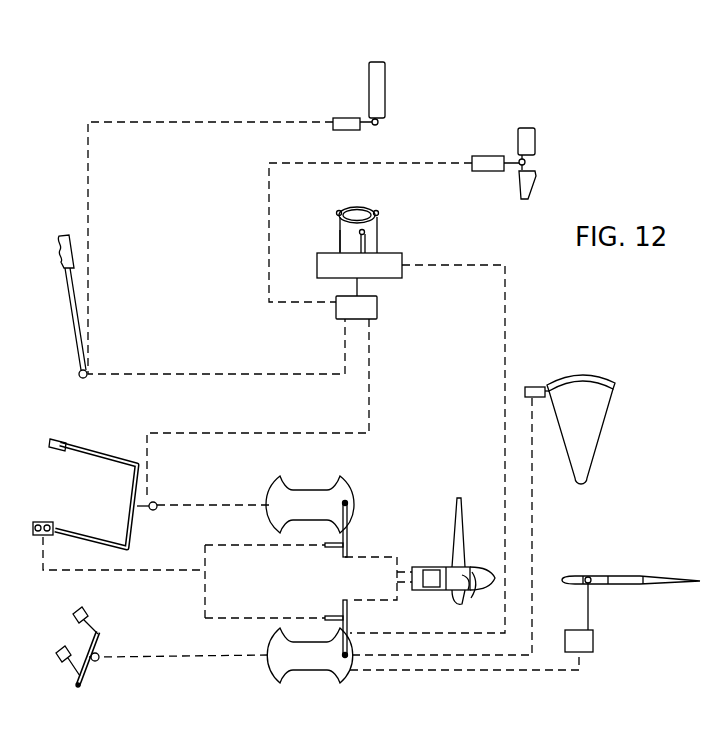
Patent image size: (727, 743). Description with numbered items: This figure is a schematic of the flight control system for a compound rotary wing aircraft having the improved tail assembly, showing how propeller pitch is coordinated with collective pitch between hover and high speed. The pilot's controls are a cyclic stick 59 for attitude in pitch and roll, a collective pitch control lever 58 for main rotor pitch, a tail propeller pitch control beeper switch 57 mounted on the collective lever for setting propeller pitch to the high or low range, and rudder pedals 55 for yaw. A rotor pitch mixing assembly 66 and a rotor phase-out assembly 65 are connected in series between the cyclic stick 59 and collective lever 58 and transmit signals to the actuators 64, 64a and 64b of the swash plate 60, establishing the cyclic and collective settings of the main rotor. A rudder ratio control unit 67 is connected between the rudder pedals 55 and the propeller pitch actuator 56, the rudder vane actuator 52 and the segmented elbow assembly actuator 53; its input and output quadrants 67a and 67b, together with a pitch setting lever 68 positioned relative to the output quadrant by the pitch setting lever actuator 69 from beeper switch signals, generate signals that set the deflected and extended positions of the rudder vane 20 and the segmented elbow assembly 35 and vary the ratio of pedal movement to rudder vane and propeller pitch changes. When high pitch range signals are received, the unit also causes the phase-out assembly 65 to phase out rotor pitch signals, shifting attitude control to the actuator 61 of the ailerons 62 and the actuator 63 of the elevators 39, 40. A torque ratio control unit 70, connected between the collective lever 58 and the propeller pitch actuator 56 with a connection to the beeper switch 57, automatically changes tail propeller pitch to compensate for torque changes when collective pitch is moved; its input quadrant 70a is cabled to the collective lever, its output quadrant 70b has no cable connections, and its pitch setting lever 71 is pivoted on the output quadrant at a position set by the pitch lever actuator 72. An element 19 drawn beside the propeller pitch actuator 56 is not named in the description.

The outboard motor 19 is at (470, 582).
The rudder vane 20 is at (650, 576).
The segmented elbow assembly 35 is at (591, 428).
The elevator 39 is at (537, 180).
The elevator 40 is at (535, 141).
The rudder vane actuator 52 is at (593, 640).
The segmented elbow assembly actuator 53 is at (533, 387).
The rudder pedals 55 is at (98, 648).
The propeller pitch actuator 56 is at (431, 570).
The tail propeller pitch control beeper switch 57 is at (50, 524).
The collective pitch control lever 58 is at (112, 456).
The cyclic stick 59 is at (72, 308).
The swash plate 60 is at (355, 210).
The aileron actuator 61 is at (345, 118).
The ailerons (flaperons) 62 is at (385, 106).
The elevator actuator 63 is at (490, 156).
The swash plate actuator 64 is at (377, 248).
The swash plate actuator 64a is at (377, 232).
The swash plate actuator 64b is at (340, 240).
The rotor phase-out assembly 65 is at (317, 270).
The rotor pitch mixing assembly 66 is at (377, 308).
The rudder ratio control unit 67 is at (311, 676).
The input quadrant 67a is at (271, 668).
The output quadrant 67b is at (345, 675).
The pitch setting lever 68 is at (348, 610).
The pitch setting lever actuator 69 is at (330, 615).
The torque ratio control unit 70 is at (317, 474).
The input quadrant 70a is at (272, 490).
The output quadrant 70b is at (345, 488).
The pitch setting lever 71 is at (348, 530).
The pitch lever actuator 72 is at (323, 548).